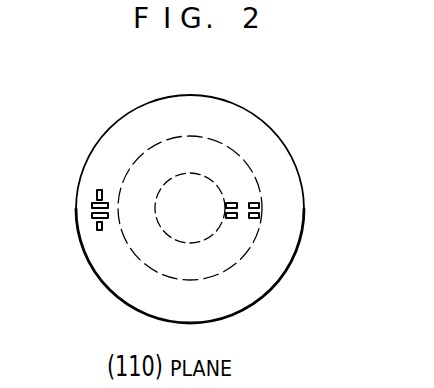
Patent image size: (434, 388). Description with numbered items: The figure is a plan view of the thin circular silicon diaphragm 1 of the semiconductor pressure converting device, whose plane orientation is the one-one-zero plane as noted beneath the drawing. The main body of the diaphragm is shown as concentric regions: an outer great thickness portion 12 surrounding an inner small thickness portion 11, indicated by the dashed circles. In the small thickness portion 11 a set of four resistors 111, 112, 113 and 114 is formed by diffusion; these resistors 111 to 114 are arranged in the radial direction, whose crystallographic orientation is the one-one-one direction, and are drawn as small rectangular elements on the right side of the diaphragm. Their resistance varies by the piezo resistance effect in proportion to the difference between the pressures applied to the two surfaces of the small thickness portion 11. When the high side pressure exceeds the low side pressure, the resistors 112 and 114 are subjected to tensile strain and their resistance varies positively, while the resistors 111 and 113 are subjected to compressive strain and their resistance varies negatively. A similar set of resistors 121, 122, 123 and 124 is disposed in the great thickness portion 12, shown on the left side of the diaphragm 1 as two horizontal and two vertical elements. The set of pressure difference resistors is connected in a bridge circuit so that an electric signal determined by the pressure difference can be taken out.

The silicon diaphragm 1 is at (193, 95).
The small thickness portion 11 is at (157, 247).
The great thickness portion 12 is at (147, 113).
The resistor 111 is at (232, 203).
The resistor 112 is at (256, 203).
The resistor 113 is at (232, 219).
The resistor 114 is at (257, 219).
The resistor 121 is at (92, 205).
The resistor 122 is at (98, 190).
The resistor 123 is at (92, 216).
The resistor 124 is at (100, 230).